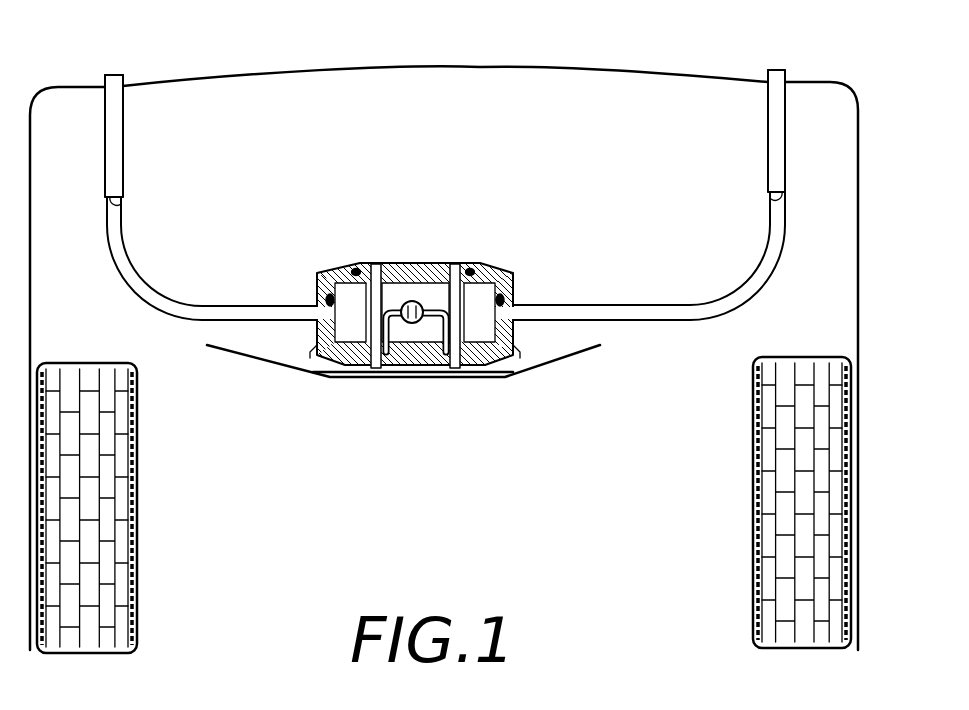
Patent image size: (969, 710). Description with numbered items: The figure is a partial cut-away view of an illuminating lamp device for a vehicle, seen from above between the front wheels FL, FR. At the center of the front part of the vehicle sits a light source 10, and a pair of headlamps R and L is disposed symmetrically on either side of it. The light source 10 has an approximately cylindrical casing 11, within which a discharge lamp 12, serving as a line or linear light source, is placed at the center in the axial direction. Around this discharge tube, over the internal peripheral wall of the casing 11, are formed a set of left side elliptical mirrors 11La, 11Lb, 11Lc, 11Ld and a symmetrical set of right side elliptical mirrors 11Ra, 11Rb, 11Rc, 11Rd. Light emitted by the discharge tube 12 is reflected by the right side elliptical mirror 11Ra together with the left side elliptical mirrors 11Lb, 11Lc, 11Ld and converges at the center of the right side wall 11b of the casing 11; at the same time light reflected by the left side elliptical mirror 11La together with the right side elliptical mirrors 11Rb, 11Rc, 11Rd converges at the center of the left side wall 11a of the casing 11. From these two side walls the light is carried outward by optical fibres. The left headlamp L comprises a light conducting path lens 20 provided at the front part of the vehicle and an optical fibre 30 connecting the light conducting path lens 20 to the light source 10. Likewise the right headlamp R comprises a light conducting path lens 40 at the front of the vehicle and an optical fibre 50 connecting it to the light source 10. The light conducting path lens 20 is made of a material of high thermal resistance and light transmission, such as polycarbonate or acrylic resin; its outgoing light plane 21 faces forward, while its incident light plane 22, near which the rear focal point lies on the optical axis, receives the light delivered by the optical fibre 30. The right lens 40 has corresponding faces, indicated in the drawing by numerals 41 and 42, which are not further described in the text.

The light source 10 is at (428, 312).
The casing 11 is at (404, 263).
The left side wall 11a is at (308, 345).
The right side wall 11b is at (520, 345).
The left side elliptical mirror 11La is at (385, 366).
The right side elliptical mirror 11Ra is at (441, 366).
The left side elliptical mirror 11Lb is at (392, 263).
The right side elliptical mirror 11Rb is at (437, 263).
The left side elliptical mirror 11Lc is at (353, 266).
The right side elliptical mirror 11Rc is at (467, 263).
The left side elliptical mirror 11Ld is at (317, 276).
The right side elliptical mirror 11Rd is at (516, 278).
The discharge lamp 12 is at (408, 352).
The light conducting path lens 20 is at (112, 172).
The outgoing light plane 21 is at (113, 74).
The incident light plane 22 is at (116, 212).
The optical fibre 30 is at (157, 283).
The light conducting path lens 40 is at (776, 152).
The right pipe end 41 is at (772, 72).
The right joint 42 is at (782, 200).
The optical fibre 50 is at (765, 268).
The left headlamp L is at (198, 75).
The right headlamp R is at (703, 71).
The front wheel FL is at (137, 508).
The front wheel FR is at (753, 506).